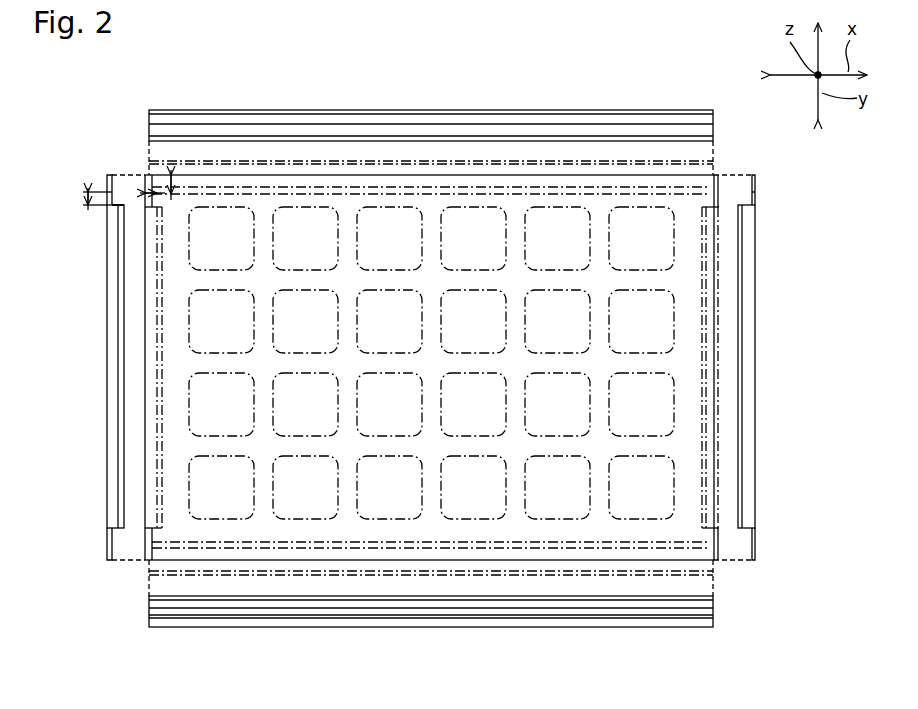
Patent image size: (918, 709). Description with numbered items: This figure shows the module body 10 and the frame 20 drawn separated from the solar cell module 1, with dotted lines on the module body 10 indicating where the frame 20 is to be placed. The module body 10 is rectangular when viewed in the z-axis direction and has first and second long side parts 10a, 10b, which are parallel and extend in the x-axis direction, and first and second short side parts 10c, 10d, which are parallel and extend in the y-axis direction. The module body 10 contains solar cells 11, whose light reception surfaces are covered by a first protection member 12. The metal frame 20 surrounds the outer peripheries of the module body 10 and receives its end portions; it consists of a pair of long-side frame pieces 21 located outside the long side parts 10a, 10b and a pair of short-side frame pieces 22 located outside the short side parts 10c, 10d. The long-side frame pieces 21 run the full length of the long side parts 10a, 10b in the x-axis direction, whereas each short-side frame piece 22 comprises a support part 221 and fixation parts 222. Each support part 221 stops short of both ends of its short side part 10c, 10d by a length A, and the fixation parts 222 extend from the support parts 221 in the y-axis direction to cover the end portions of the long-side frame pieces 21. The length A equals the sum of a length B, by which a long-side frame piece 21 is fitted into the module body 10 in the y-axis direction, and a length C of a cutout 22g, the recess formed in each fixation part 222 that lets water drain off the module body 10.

The solar cell module 1 is at (625, 73).
The module body 10 is at (692, 407).
The first long side part 10a is at (450, 197).
The second long side part 10b is at (432, 535).
The first short side part 10c is at (162, 372).
The second short side part 10d is at (696, 353).
The solar cells 11 is at (683, 432).
The first protection member 12 is at (690, 480).
The frame 20 is at (632, 578).
The long-side frame pieces 21 is at (565, 575).
The short-side frame pieces 22 is at (105, 447).
The support parts 221 is at (113, 306).
The fixation parts 222 is at (107, 192).
The cutout 22g is at (118, 208).
The length A is at (148, 193).
The length B is at (171, 178).
The length C is at (85, 199).